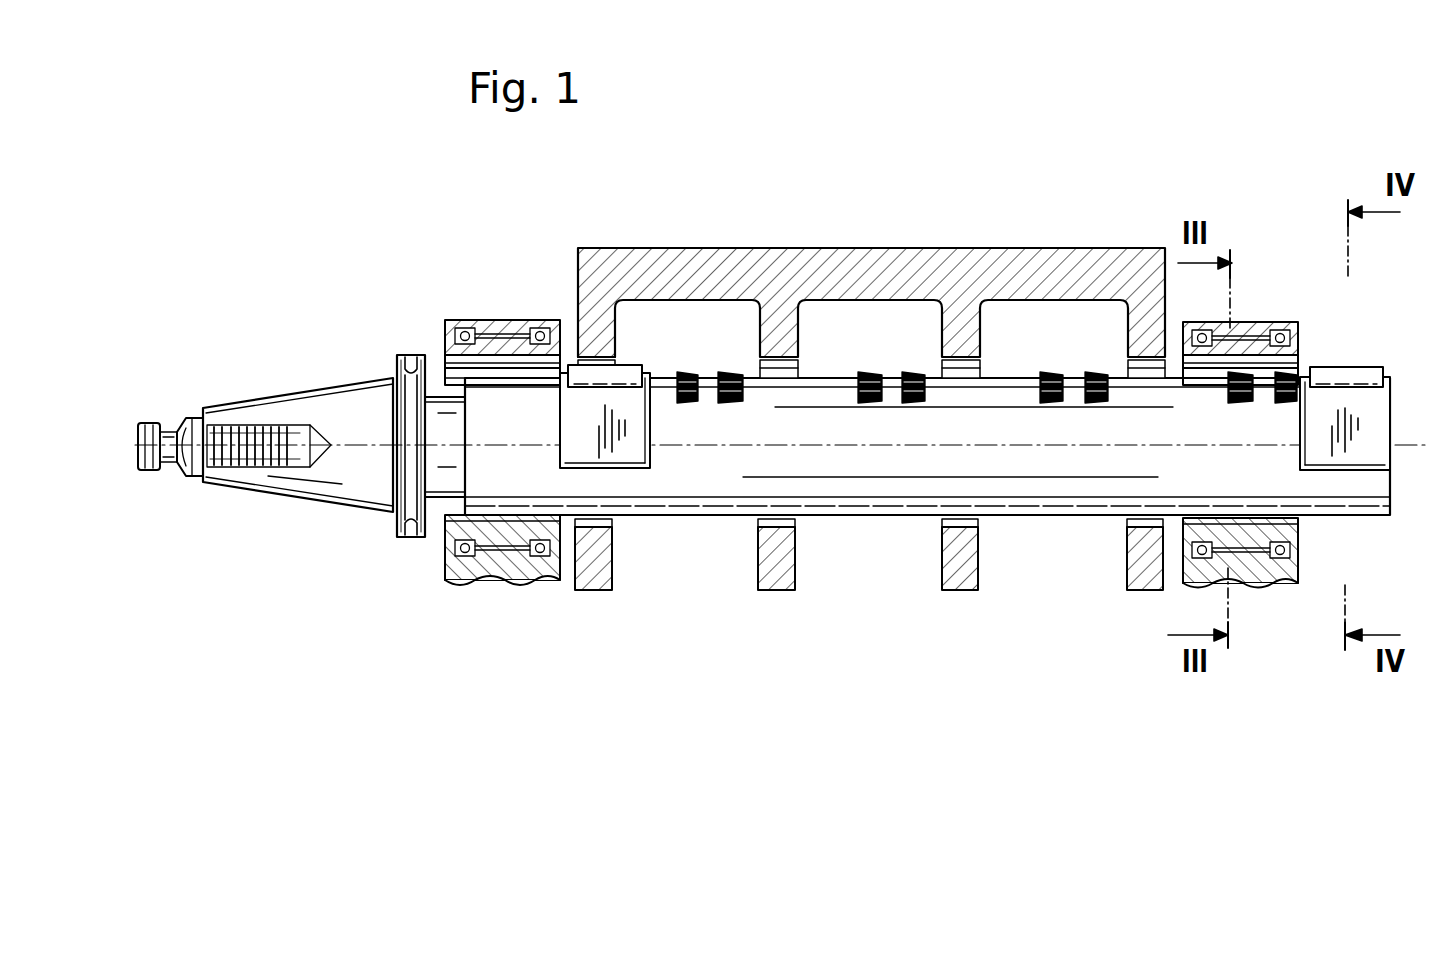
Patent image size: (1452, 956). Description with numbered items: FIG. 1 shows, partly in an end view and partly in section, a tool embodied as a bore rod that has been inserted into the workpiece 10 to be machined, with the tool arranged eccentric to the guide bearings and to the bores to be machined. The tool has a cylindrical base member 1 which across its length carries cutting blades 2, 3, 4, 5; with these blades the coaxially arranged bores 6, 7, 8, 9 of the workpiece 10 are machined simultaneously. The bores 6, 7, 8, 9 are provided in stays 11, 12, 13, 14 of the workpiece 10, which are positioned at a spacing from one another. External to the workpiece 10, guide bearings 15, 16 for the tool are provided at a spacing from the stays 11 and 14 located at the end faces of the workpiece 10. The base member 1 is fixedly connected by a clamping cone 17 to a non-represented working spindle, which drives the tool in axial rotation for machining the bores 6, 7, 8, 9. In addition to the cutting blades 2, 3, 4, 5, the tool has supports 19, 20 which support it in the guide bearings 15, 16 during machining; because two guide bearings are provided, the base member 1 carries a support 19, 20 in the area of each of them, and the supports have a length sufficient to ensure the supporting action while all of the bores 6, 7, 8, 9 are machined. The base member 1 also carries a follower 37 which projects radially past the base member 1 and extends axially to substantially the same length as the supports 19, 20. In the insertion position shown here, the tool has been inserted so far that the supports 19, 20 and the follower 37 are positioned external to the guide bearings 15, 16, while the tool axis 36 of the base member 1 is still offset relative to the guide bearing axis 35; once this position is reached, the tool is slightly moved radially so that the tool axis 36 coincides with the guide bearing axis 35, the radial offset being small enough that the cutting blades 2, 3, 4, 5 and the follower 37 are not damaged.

The base member 1 is at (497, 404).
The cutting blade 2 is at (690, 372).
The cutting blade 3 is at (870, 372).
The cutting blade 4 is at (1047, 372).
The cutting blade 5 is at (1255, 372).
The bore 6 is at (594, 358).
The bore 7 is at (781, 350).
The bore 8 is at (962, 360).
The bore 9 is at (1147, 368).
The workpiece 10 is at (617, 262).
The stay 11 is at (600, 556).
The stay 12 is at (766, 592).
The stay 13 is at (955, 588).
The stay 14 is at (1140, 550).
The guide bearing 15 is at (463, 580).
The guide bearing 16 is at (1278, 578).
The clamping cone 17 is at (358, 418).
The support 19 is at (622, 516).
The support 20 is at (636, 452).
The guide bearing axis 35 is at (907, 450).
The tool axis 36 is at (823, 450).
The follower 37 is at (634, 366).